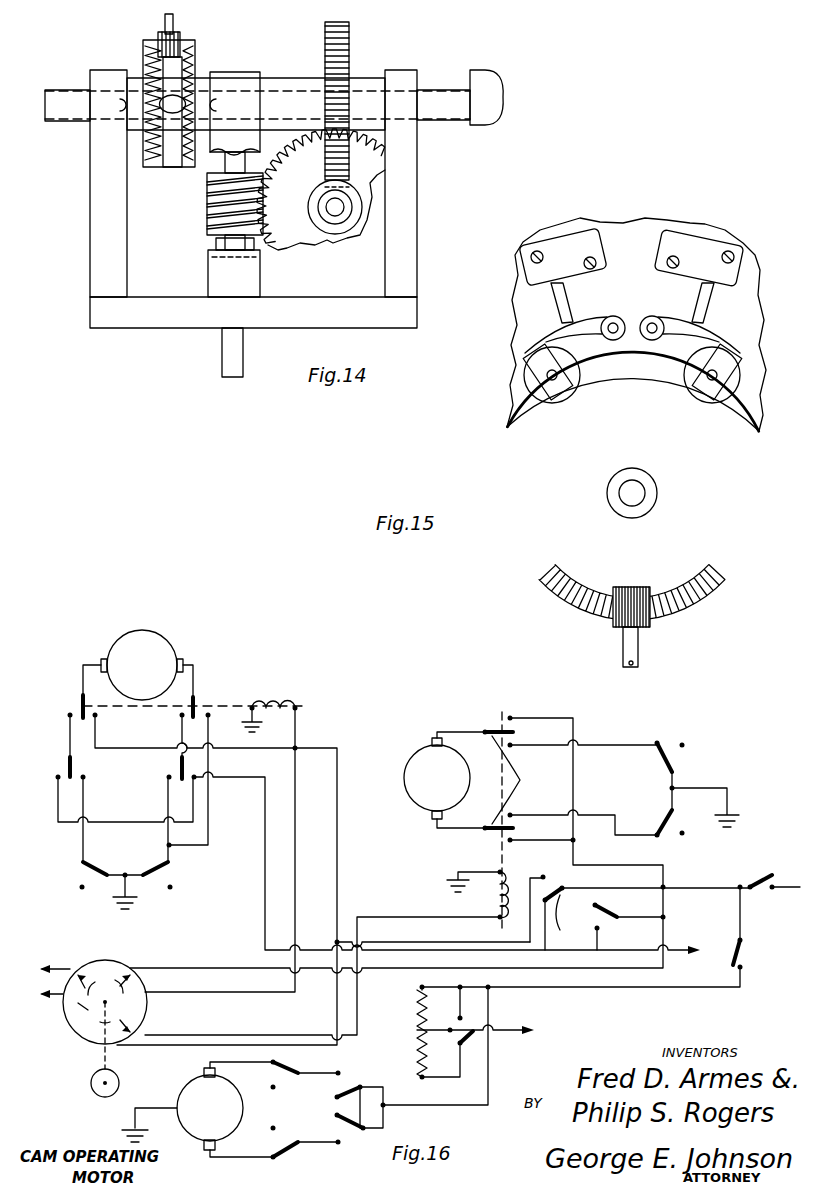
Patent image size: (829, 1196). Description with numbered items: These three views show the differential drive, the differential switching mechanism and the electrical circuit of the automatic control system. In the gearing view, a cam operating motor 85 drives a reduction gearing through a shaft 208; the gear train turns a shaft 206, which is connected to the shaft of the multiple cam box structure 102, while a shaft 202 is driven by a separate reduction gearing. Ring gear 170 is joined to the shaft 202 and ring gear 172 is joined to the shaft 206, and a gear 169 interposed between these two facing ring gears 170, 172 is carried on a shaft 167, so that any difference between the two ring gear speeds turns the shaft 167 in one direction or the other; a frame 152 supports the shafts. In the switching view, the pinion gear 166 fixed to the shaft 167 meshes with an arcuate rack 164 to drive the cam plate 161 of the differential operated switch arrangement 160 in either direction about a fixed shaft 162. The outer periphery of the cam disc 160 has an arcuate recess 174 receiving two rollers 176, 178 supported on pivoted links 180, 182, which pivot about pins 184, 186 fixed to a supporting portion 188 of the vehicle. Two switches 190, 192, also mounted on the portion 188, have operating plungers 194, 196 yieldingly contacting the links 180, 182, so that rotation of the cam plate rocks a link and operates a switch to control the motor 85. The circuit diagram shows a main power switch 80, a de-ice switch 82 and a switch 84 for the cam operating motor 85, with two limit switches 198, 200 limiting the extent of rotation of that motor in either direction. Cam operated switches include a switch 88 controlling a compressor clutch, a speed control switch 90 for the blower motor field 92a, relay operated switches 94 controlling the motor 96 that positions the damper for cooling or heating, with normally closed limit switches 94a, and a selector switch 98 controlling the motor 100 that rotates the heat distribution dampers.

In FIG. 14, the box structure 102 is at (504, 97).
In FIG. 14, the frame 152 is at (417, 156).
In FIG. 14, the shaft 167 is at (163, 30).
In FIG. 15, the shaft 167 is at (640, 657).
In FIG. 14, the gear 169 is at (180, 36).
In FIG. 14, the ring gear 170 is at (150, 170).
In FIG. 14, the ring gear 172 is at (180, 170).
In FIG. 14, the shaft 202 is at (53, 105).
In FIG. 14, the shaft 206 is at (437, 100).
In FIG. 14, the shaft 208 is at (226, 360).
In FIG. 15, the differential operated switch arrangement 160 is at (506, 430).
In FIG. 16, the differential operated switch arrangement 160 is at (363, 1085).
In FIG. 15, the cam plate 161 is at (508, 540).
In FIG. 15, the fixed shaft 162 is at (640, 493).
In FIG. 15, the arcuate rack 164 is at (693, 583).
In FIG. 15, the pinion gear 166 is at (632, 588).
In FIG. 15, the arcuate recess 174 is at (640, 385).
In FIG. 15, the roller 176 is at (548, 404).
In FIG. 15, the roller 178 is at (712, 404).
In FIG. 15, the pivoted link 180 is at (590, 326).
In FIG. 15, the pivoted link 182 is at (705, 341).
In FIG. 15, the pin 184 is at (614, 336).
In FIG. 15, the pin 186 is at (652, 336).
In FIG. 15, the supporting portion 188 is at (638, 236).
In FIG. 15, the switch 190 is at (556, 245).
In FIG. 16, the switch 190 is at (347, 1087).
In FIG. 15, the switch 192 is at (712, 245).
In FIG. 16, the switch 192 is at (348, 1128).
In FIG. 15, the operating plunger 194 is at (558, 295).
In FIG. 15, the operating plunger 196 is at (698, 292).
In FIG. 16, the main power switch 80 is at (757, 882).
In FIG. 16, the de-ice switch 82 is at (97, 1093).
In FIG. 16, the switch 84 is at (737, 955).
In FIG. 16, the cam operating motor 85 is at (217, 1084).
In FIG. 16, the switch 88 is at (606, 913).
In FIG. 16, the speed control switch 90 is at (467, 1045).
In FIG. 16, the motor field 92a is at (418, 1004).
In FIG. 16, the relay operated switches 94 is at (512, 821).
In FIG. 16, the limit switches 94a is at (668, 780).
In FIG. 16, the motor 96 is at (428, 790).
In FIG. 16, the selector switch 98 is at (110, 962).
In FIG. 16, the motor 100 is at (140, 645).
In FIG. 16, the limit switch 198 is at (283, 1076).
In FIG. 16, the limit switch 200 is at (290, 1145).